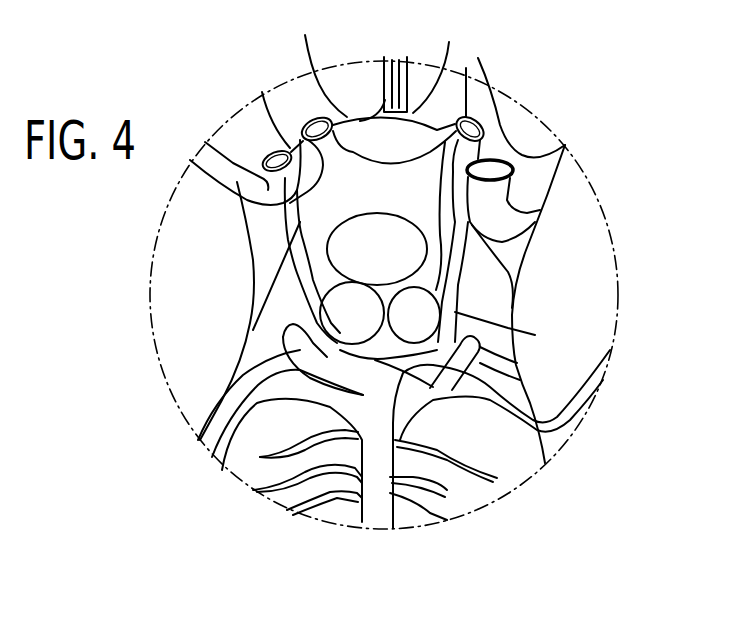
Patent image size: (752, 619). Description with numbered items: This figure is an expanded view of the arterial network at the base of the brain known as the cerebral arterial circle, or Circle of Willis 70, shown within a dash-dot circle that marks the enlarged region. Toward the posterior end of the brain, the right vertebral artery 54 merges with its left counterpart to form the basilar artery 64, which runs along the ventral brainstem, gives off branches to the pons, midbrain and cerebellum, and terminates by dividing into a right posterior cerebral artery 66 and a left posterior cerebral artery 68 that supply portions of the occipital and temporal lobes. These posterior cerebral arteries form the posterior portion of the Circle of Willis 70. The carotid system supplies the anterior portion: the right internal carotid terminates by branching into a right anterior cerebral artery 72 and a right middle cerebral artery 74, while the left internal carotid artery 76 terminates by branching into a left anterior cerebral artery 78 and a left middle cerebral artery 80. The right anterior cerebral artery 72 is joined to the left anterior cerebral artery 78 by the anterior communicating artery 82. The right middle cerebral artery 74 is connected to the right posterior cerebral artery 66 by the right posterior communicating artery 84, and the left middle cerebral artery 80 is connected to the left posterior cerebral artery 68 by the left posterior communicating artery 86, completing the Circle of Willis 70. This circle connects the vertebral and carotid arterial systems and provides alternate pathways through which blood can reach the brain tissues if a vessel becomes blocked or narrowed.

The right vertebral artery 54 is at (267, 145).
The basilar artery 64 is at (415, 495).
The right posterior cerebral artery 66 is at (305, 316).
The left posterior cerebral artery 68 is at (495, 365).
The Circle of Willis 70 is at (346, 94).
The right anterior cerebral artery 72 is at (307, 118).
The right middle cerebral artery 74 is at (237, 183).
The left internal carotid artery 76 is at (521, 260).
The left anterior cerebral artery 78 is at (449, 73).
The left middle cerebral artery 80 is at (518, 223).
The anterior communicating artery 82 is at (397, 57).
The right posterior communicating artery 84 is at (290, 253).
The left posterior communicating artery 86 is at (453, 286).